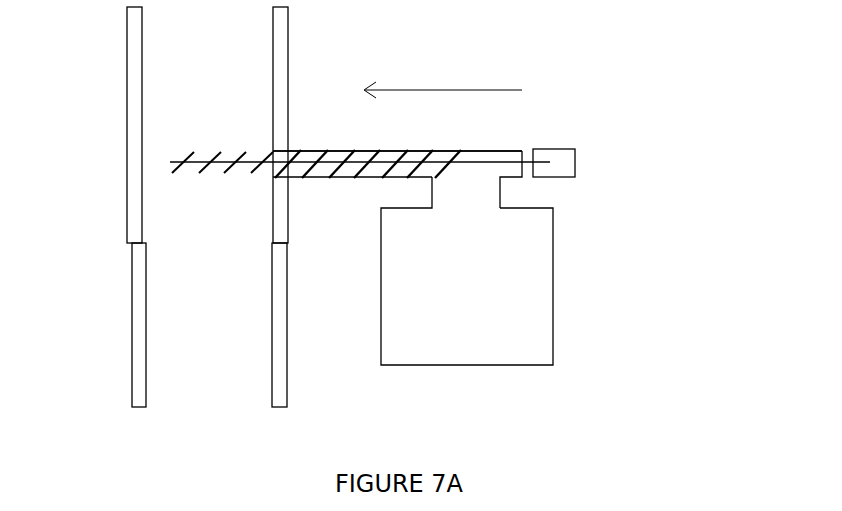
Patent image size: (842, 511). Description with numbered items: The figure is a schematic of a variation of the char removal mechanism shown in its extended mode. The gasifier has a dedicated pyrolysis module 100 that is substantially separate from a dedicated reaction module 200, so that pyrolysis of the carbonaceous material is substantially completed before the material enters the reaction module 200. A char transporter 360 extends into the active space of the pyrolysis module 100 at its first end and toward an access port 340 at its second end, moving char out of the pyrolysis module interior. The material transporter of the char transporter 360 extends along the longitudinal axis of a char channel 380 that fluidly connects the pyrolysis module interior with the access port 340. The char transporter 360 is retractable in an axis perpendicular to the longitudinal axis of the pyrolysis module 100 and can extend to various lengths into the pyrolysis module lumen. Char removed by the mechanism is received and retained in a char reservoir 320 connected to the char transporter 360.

The pyrolysis module 100 is at (133, 77).
The reaction module 200 is at (133, 288).
The char reservoir 320 is at (552, 278).
The access port 340 is at (497, 203).
The char transporter 360 is at (388, 146).
The char channel 380 is at (323, 140).